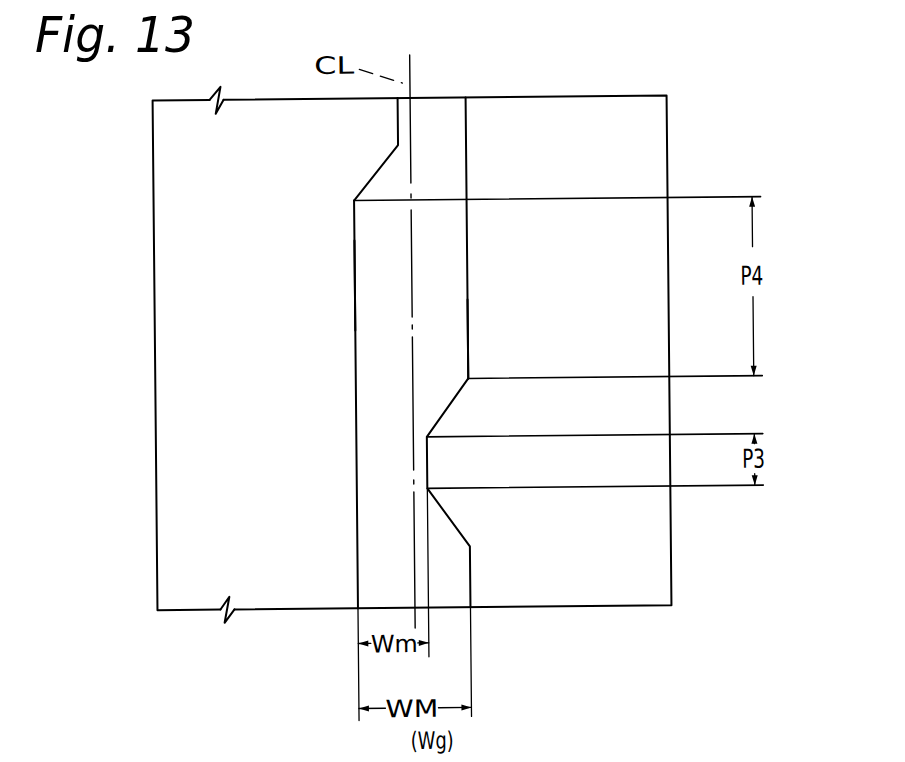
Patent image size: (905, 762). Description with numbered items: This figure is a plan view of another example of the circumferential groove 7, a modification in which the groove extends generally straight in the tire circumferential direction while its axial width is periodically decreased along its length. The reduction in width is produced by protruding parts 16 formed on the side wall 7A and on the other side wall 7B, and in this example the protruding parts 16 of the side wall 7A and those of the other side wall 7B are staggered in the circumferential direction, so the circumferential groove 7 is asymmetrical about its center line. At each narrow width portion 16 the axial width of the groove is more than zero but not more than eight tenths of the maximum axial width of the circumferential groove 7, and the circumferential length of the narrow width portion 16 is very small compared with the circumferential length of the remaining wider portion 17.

The circumferential groove 7 is at (372, 557).
The side wall 7A is at (468, 353).
The other side wall 7B is at (356, 291).
The narrow width portion 16 is at (400, 123).
The wider portion 17 is at (468, 262).